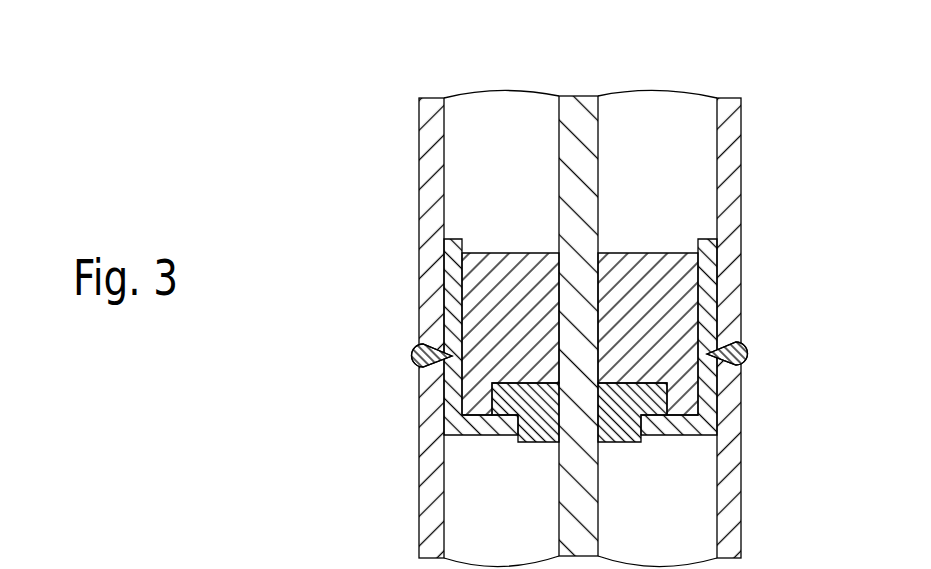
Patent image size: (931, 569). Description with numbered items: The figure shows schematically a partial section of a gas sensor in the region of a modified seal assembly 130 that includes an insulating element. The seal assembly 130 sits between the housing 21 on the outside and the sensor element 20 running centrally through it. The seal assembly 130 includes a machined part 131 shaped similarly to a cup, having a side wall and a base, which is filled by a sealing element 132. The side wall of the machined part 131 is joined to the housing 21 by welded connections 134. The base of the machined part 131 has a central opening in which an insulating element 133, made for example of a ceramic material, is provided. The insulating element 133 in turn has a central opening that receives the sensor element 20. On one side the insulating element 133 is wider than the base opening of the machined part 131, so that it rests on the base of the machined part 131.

The sensor element 20 is at (582, 128).
The housing 21 is at (432, 139).
The seal assembly 130 is at (502, 200).
The machined part 131 is at (452, 257).
The sealing element 132 is at (482, 299).
The insulating element 133 is at (515, 400).
The welded connections 134 is at (414, 356).